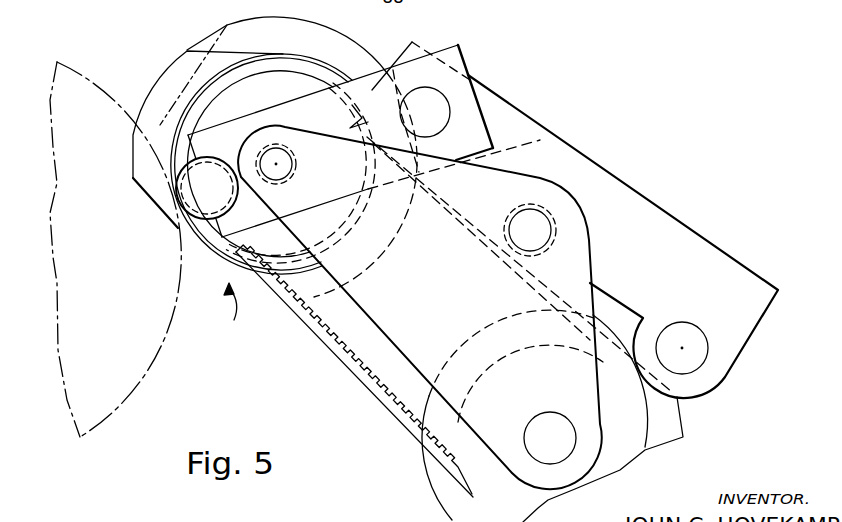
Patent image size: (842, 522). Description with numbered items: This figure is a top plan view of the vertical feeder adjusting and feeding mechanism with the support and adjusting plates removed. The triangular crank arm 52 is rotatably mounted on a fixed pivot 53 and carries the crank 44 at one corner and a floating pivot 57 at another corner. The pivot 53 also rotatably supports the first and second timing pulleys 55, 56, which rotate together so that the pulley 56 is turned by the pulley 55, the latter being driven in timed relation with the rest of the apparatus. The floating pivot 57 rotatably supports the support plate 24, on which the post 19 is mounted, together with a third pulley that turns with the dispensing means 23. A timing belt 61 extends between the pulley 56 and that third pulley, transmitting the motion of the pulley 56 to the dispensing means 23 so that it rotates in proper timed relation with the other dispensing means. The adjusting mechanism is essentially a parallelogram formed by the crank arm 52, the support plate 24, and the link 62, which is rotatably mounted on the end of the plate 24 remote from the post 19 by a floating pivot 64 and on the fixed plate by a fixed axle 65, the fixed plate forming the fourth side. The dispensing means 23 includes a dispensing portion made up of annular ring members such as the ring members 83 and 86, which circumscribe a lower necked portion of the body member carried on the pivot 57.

The post 19 is at (207, 188).
The dispensing means 23 is at (236, 315).
The support plate 24 is at (364, 141).
The crank 44 is at (551, 229).
The crank arm 52 is at (420, 308).
The pivot 53 is at (550, 438).
The first timing pulley 55 is at (670, 430).
The second timing pulley 56 is at (620, 381).
The floating pivot 57 is at (292, 164).
The timing belt 61 is at (364, 383).
The link 62 is at (623, 236).
The floating pivot 64 is at (425, 112).
The fixed axle 65 is at (697, 356).
The annular ring member 83 is at (242, 149).
The annular ring member 86 is at (361, 54).